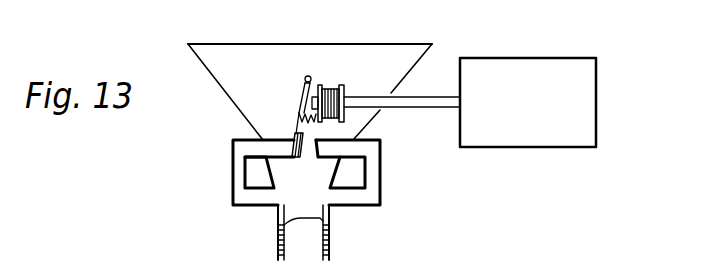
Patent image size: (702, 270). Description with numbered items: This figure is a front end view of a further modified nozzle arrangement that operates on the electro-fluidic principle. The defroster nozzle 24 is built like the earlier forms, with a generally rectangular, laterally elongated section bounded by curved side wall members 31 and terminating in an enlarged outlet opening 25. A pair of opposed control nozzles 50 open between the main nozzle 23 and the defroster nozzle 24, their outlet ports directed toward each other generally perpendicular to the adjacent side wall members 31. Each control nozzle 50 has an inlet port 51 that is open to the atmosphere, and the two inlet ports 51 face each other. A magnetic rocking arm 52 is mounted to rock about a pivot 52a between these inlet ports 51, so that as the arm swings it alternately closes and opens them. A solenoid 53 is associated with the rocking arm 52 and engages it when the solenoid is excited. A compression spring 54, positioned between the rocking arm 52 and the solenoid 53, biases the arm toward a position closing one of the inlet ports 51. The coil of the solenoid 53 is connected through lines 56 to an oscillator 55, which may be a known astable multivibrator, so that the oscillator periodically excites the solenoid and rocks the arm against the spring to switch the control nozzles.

The main nozzle 23 is at (330, 245).
The defroster nozzle 24 is at (230, 101).
The outlet opening 25 is at (266, 44).
The side wall member 31 is at (204, 64).
The control nozzle 50 is at (232, 180).
The inlet port 51 is at (291, 146).
The magnetic rocking arm 52 is at (305, 101).
The pivot 52a is at (309, 75).
The solenoid 53 is at (340, 84).
The compression spring 54 is at (313, 131).
The oscillator 55 is at (520, 148).
The line 56 is at (445, 97).